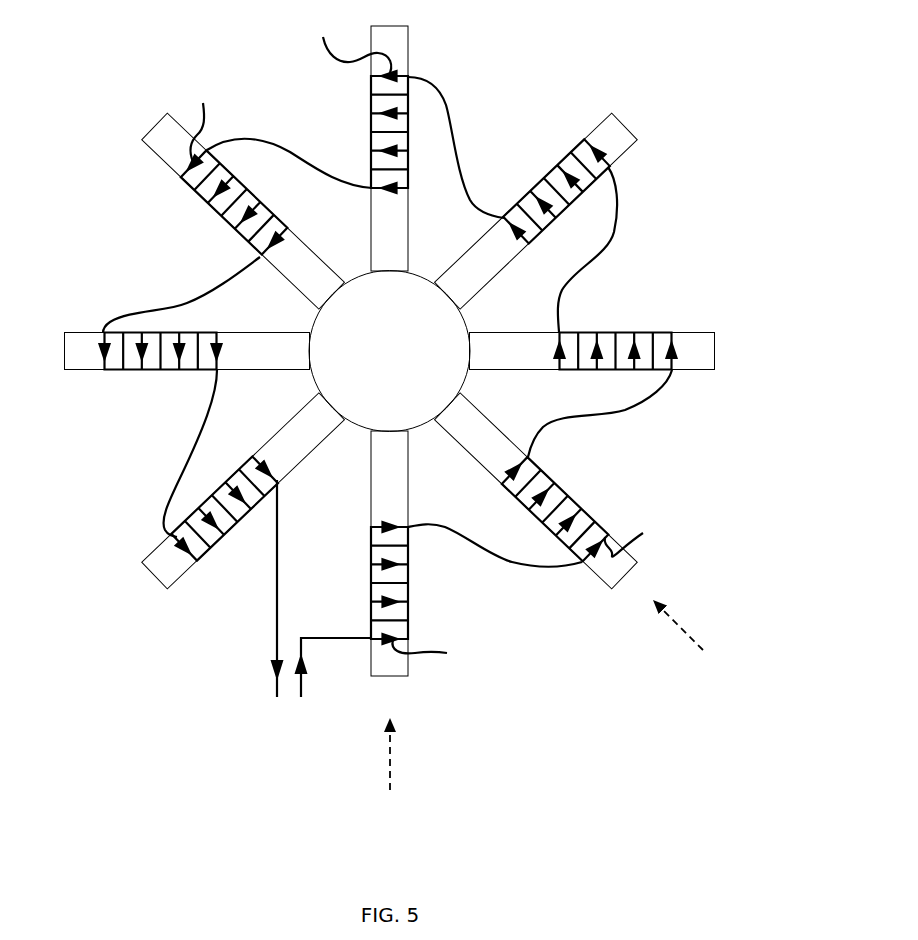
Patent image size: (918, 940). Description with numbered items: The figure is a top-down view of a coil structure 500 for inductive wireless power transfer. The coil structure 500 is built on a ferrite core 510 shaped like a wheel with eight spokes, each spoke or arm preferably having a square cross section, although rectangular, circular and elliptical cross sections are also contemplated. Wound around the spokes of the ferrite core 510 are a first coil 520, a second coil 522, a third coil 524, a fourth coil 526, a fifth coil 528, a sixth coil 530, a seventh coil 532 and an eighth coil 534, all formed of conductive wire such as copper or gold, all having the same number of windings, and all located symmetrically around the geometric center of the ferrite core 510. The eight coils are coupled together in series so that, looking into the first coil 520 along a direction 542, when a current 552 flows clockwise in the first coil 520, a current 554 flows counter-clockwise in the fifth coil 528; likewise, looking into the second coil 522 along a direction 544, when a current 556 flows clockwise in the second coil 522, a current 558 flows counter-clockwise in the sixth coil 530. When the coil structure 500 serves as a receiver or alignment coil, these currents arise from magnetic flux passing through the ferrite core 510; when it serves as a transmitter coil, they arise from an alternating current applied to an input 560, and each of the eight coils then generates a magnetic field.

The coil structure 500 is at (180, 662).
The ferrite core 510 is at (390, 677).
The first coil 520 is at (428, 602).
The second coil 522 is at (597, 488).
The third coil 524 is at (635, 320).
The fourth coil 526 is at (533, 165).
The fifth coil 528 is at (352, 115).
The sixth coil 530 is at (202, 220).
The seventh coil 532 is at (147, 383).
The eighth coil 534 is at (145, 507).
The direction 542 is at (390, 769).
The direction 544 is at (696, 640).
The current 552 is at (443, 656).
The current 554 is at (346, 45).
The current 556 is at (645, 536).
The current 558 is at (203, 119).
The input 560 is at (283, 722).